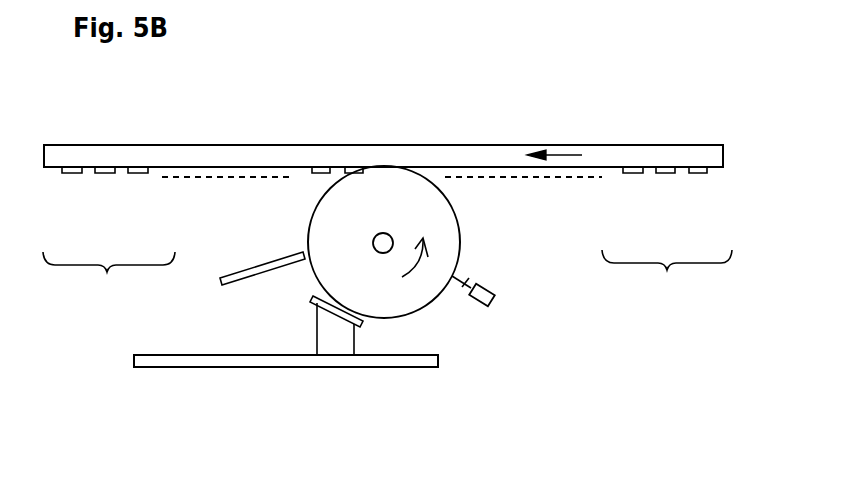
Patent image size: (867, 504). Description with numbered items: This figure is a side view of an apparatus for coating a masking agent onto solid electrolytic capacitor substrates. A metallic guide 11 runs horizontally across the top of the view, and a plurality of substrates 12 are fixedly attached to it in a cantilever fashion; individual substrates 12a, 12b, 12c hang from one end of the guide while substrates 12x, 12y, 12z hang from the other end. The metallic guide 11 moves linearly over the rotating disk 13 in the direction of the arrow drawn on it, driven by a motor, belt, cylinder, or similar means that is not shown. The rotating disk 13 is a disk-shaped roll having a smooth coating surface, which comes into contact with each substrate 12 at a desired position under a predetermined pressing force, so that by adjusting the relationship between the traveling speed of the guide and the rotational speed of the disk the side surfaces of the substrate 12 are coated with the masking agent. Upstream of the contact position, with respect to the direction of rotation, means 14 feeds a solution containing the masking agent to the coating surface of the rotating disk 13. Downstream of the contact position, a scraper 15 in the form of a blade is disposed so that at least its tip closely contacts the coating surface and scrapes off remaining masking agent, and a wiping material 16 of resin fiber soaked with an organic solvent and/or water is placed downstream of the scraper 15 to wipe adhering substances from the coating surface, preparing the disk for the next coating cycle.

The metallic guide 11 is at (293, 157).
The substrate 12 is at (387, 234).
The substrate 12z is at (72, 174).
The substrate 12y is at (105, 174).
The substrate 12x is at (138, 174).
The substrate 12c is at (633, 174).
The substrate 12b is at (665, 174).
The substrate 12a is at (698, 174).
The rotating disk 13 is at (413, 210).
The means for feeding masking agent solution 14 is at (480, 303).
The scraper 15 is at (253, 272).
The wiping material 16 is at (347, 337).